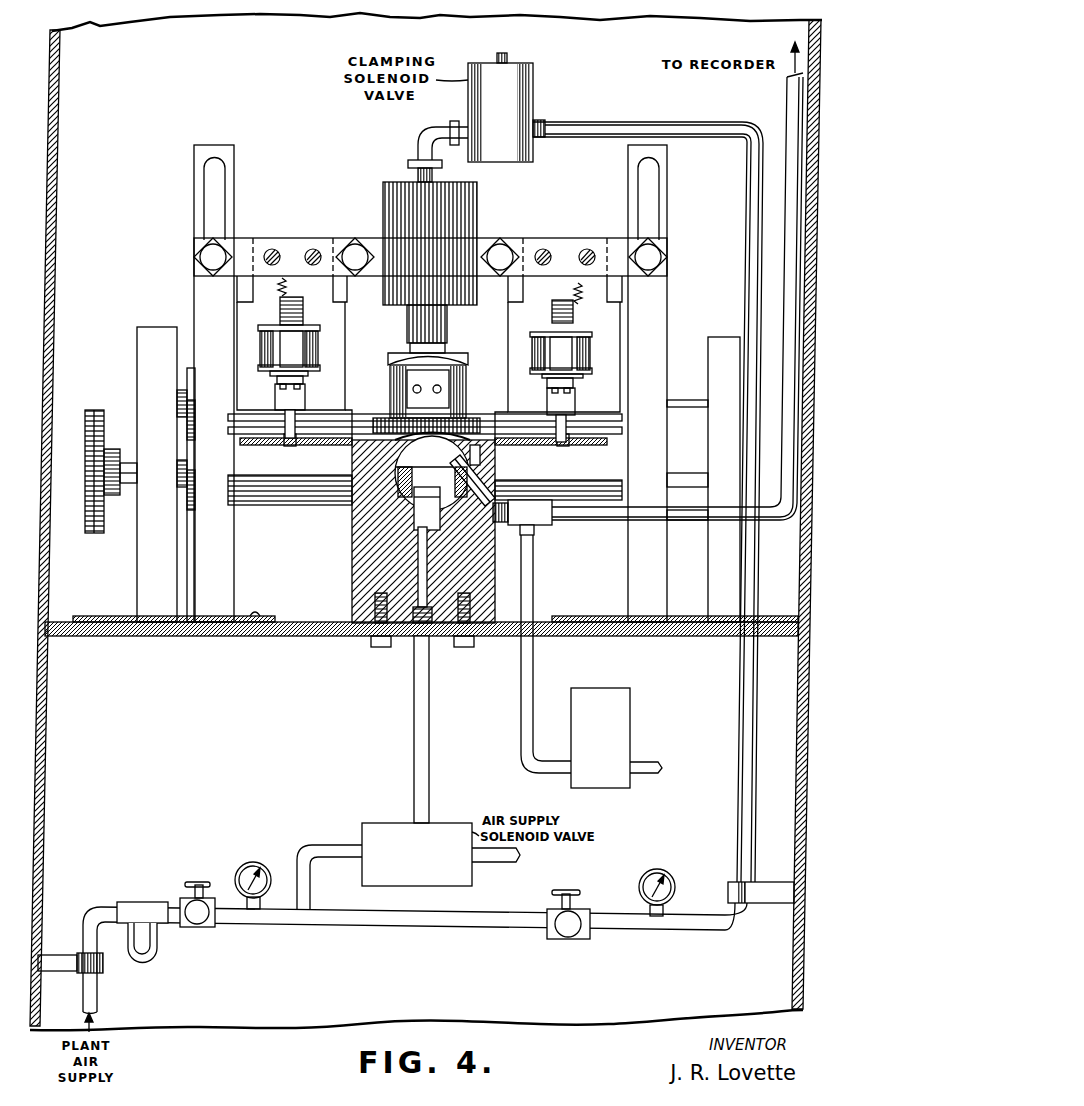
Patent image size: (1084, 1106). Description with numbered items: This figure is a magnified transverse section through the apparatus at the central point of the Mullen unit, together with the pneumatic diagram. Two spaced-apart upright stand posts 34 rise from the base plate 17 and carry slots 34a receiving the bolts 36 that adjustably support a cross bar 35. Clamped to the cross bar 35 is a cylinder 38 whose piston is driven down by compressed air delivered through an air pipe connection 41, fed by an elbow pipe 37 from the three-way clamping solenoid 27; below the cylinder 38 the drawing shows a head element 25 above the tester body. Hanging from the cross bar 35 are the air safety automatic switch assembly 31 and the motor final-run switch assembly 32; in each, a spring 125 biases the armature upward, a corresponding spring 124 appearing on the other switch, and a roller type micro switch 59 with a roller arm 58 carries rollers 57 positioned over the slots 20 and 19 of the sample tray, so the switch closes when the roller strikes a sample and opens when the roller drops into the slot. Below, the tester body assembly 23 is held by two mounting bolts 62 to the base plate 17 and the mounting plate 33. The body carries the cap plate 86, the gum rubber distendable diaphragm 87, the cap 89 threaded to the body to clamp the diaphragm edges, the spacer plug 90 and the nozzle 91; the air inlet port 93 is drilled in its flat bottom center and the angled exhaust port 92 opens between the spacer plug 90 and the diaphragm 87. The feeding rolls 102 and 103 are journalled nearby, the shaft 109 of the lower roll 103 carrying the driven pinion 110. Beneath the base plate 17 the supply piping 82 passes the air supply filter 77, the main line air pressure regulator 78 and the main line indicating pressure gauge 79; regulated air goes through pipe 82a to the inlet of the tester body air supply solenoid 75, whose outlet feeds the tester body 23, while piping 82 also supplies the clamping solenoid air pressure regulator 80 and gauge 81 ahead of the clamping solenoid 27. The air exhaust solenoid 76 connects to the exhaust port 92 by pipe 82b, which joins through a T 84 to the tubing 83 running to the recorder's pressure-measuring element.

The base plate 17 is at (185, 636).
The slot 19 is at (290, 445).
The slot 20 is at (562, 450).
The tester body assembly 23 is at (352, 570).
The piston head 25 is at (396, 362).
The clamping solenoid 27 is at (533, 92).
The air safety automatic switch assembly 31 is at (592, 352).
The motor final-run switch assembly 32 is at (258, 340).
The mounting plate 33 is at (257, 625).
The upright stand posts 34 is at (202, 308).
The slot 34a is at (226, 196).
The cross bar 35 is at (572, 238).
The bolts 36 is at (205, 252).
The elbow pipe 37 is at (437, 136).
The cylinder 38 is at (478, 216).
The air pipe connection 41 is at (418, 166).
The rollers 57 is at (289, 446).
The roller arm 58 is at (300, 412).
The micro switch 59 is at (275, 397).
The mounting bolts 62 is at (375, 647).
The air supply solenoid 75 is at (382, 823).
The air exhaust solenoid 76 is at (630, 738).
The air supply filter 77 is at (150, 950).
The main line air pressure regulator 78 is at (200, 927).
The main line indicating pressure gauge 79 is at (262, 848).
The clamping solenoid air pressure regulator 80 is at (565, 939).
The clamping solenoid indicating pressure gauge 81 is at (655, 870).
The supply piping 82 is at (345, 927).
The pipe 82a is at (429, 752).
The pipe 82b is at (534, 606).
The tubing 83 is at (600, 520).
The T 84 is at (535, 525).
The cap plate 86 is at (355, 456).
The distendable diaphragm 87 is at (480, 468).
The cap 89 is at (500, 455).
The spacer plug 90 is at (418, 502).
The nozzle 91 is at (423, 540).
The exhaust port 92 is at (498, 522).
The air inlet port 93 is at (410, 640).
The feeding roll 102 is at (485, 374).
The feeding roll 103 is at (252, 505).
The shaft 109 is at (128, 462).
The driven pinion 110 is at (91, 410).
The spring 124 is at (574, 312).
The spring 125 is at (286, 292).